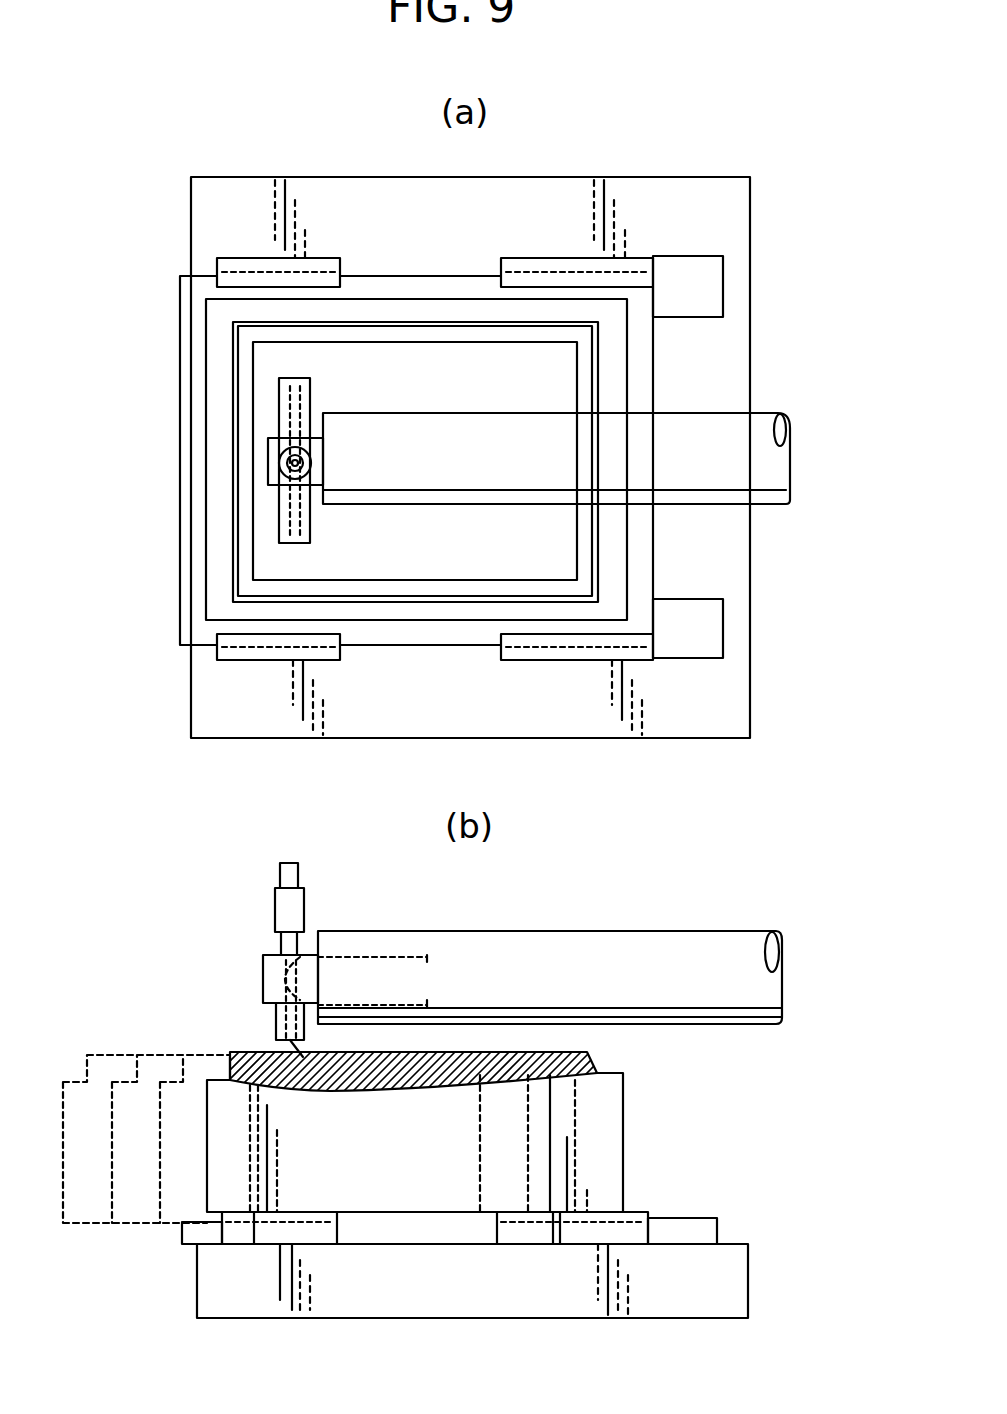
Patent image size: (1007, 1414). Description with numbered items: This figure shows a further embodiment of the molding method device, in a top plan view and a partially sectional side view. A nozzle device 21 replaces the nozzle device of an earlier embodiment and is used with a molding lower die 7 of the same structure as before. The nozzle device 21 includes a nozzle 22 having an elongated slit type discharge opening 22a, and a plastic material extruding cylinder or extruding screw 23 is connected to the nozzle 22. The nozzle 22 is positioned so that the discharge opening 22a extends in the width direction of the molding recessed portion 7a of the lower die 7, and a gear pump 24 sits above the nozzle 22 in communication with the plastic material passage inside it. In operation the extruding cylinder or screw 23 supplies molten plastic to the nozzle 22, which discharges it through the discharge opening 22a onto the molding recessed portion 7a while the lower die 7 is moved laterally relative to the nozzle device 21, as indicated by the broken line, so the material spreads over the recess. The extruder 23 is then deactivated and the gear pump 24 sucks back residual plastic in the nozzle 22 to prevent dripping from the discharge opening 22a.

The molding lower die 7 is at (403, 637).
The molding recessed portion 7a is at (458, 568).
The nozzle device 21 is at (263, 453).
The nozzle 22 is at (280, 523).
The discharge opening 22a is at (277, 500).
The plastic material extruding cylinder or extruding screw 23 is at (733, 423).
The gear pump 24 is at (295, 912).